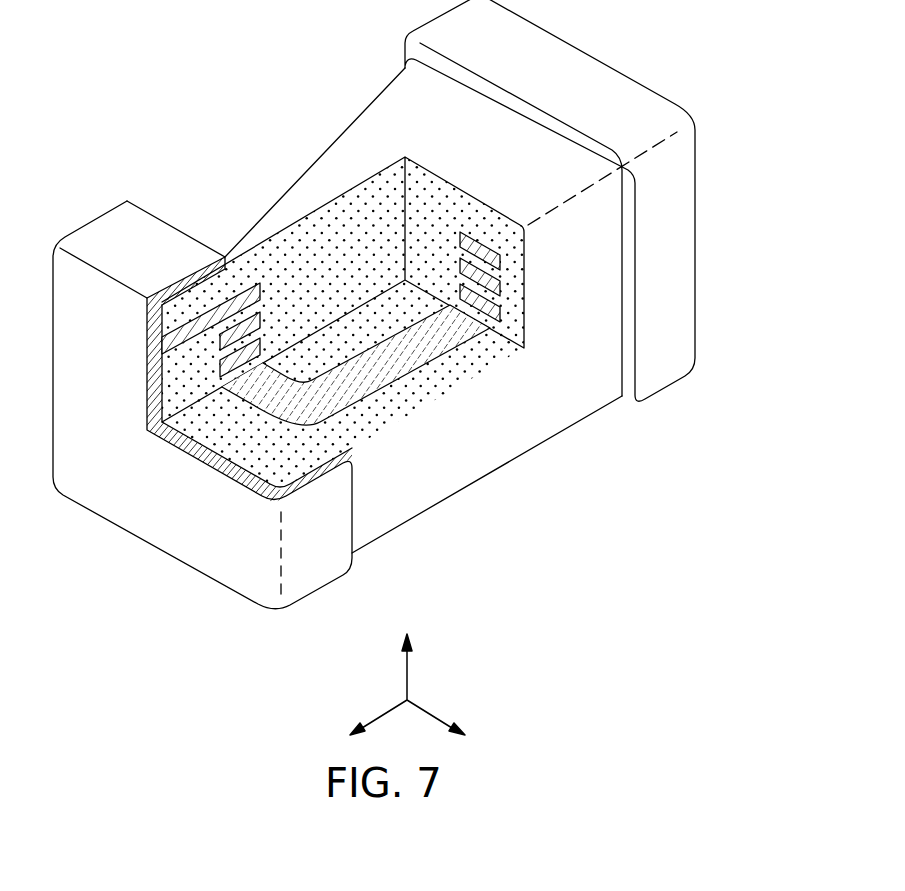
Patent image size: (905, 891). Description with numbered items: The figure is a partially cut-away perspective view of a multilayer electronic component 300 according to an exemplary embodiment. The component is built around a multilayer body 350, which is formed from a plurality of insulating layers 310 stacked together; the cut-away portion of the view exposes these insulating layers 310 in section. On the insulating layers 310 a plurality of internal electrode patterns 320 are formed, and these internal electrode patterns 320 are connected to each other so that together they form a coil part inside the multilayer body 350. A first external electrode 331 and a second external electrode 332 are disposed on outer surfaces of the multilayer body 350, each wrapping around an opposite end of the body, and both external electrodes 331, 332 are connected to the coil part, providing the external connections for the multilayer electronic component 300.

The multilayer electronic component 300 is at (280, 41).
The insulating layers 310 is at (358, 420).
The internal electrode patterns 320 is at (430, 350).
The first external electrode 331 is at (158, 520).
The second external electrode 332 is at (692, 267).
The multilayer body 350 is at (468, 457).